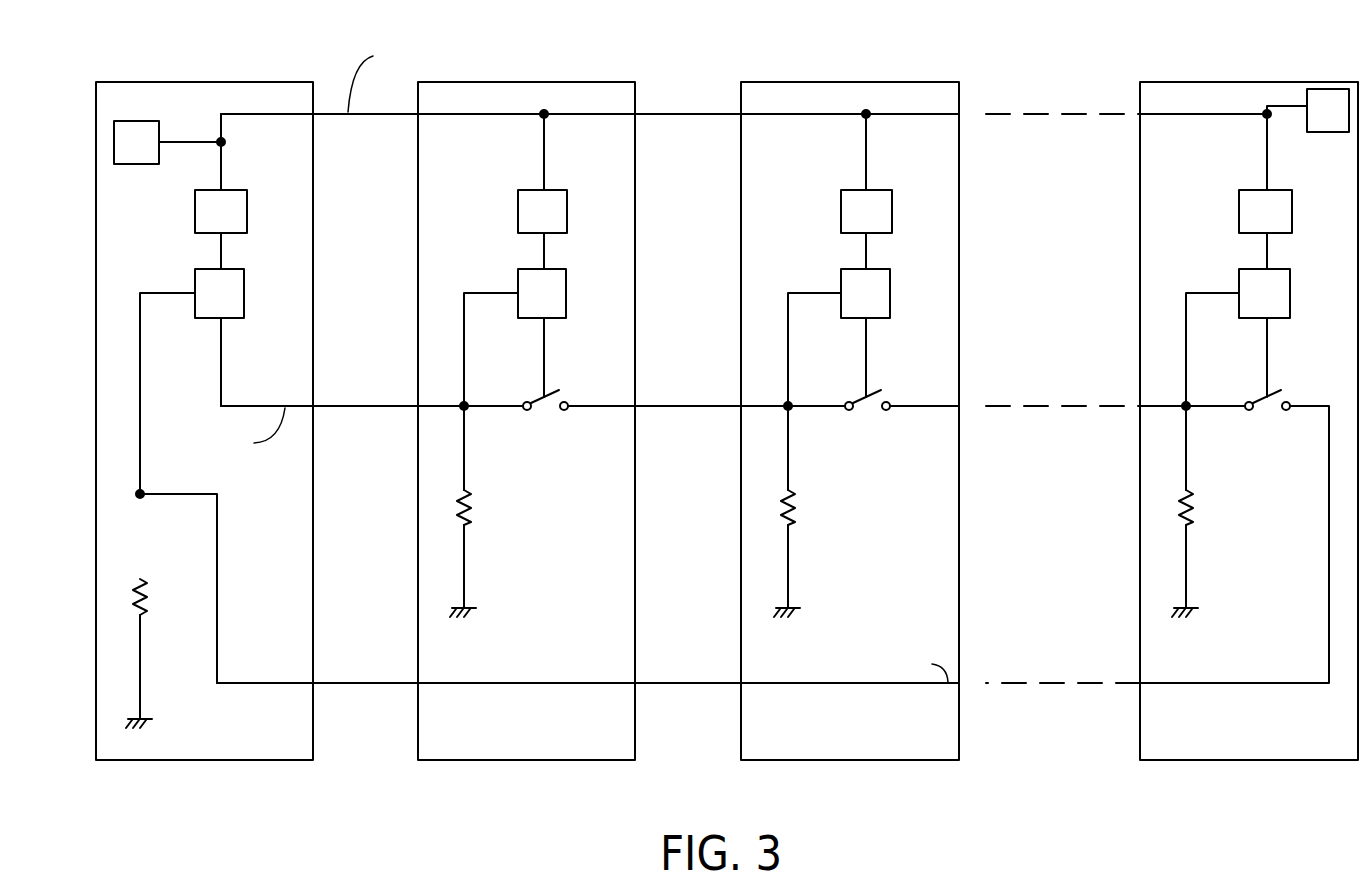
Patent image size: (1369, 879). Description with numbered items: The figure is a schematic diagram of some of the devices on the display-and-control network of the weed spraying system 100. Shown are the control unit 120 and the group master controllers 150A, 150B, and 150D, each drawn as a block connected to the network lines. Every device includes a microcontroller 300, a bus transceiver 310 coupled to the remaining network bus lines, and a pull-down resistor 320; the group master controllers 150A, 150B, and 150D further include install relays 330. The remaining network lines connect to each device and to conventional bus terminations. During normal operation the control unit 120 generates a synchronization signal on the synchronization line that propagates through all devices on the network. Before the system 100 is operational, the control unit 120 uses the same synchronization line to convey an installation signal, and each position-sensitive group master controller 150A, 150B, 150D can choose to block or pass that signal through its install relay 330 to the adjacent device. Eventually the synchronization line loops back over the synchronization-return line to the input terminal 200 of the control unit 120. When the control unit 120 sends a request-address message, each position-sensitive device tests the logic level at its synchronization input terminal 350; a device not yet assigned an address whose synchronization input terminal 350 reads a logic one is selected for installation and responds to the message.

The weed spraying system 100 is at (1016, 70).
The control unit 120 is at (281, 752).
The group master controller 150A is at (625, 753).
The group master controller 150B is at (952, 753).
The group master controller 150D is at (1339, 753).
The input terminal 200 is at (182, 291).
The microcontroller 300 is at (244, 293).
The bus transceiver 310 is at (247, 212).
The pull-down resistor 320 is at (147, 598).
The install relay 330 is at (556, 390).
The SYNC input terminal 350 is at (466, 405).